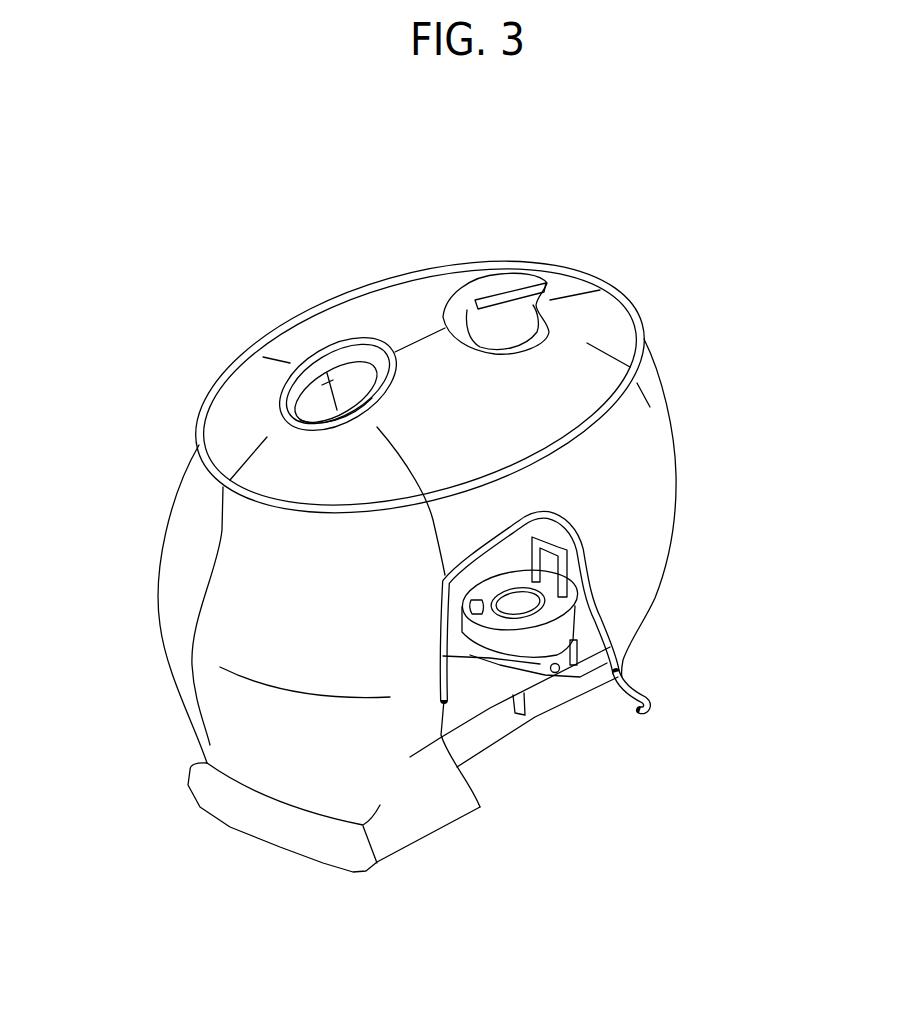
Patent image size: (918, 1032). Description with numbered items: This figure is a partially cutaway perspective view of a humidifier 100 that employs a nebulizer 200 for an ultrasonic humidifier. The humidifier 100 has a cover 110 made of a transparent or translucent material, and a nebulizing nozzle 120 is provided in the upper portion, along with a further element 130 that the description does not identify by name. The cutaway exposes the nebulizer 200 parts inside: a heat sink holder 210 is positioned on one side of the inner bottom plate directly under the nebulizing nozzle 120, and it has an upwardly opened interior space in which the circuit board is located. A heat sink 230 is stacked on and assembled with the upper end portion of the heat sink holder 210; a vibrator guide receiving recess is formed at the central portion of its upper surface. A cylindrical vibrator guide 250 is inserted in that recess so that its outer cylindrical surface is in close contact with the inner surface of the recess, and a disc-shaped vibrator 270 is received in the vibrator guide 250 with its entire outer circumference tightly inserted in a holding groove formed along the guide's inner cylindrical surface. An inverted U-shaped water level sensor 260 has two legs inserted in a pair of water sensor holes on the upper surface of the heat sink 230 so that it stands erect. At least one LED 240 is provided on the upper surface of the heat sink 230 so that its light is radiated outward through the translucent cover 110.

The humidifier 100 is at (336, 226).
The cover 110 is at (223, 398).
The nebulizing nozzle 120 is at (545, 262).
The opening 130 is at (342, 352).
The motor assembly 200 is at (571, 648).
The heat sink holder 210 is at (553, 690).
The heat sink 230 is at (578, 618).
The LED 240 is at (489, 605).
The cylindrical vibrator guide 250 is at (603, 693).
The water level sensor 260 is at (588, 555).
The disc-shaped vibrator 270 is at (552, 540).